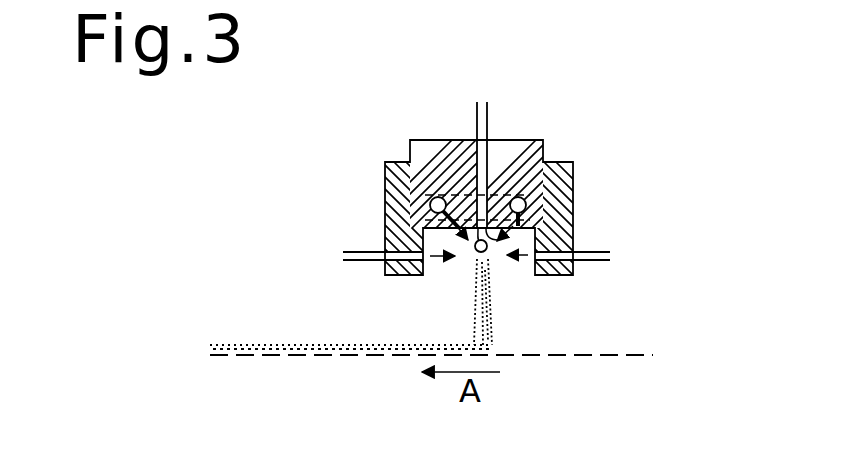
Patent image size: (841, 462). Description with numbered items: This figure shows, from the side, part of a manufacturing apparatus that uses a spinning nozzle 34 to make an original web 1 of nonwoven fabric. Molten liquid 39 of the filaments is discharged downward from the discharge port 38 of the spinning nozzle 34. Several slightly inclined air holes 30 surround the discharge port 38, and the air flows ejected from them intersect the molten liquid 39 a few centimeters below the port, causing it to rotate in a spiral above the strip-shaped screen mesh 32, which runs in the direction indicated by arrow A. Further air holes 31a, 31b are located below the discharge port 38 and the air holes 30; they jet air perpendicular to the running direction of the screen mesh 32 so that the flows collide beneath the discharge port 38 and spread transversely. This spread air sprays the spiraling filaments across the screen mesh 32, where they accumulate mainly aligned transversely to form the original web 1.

The original web 1 is at (320, 348).
The air holes 30 is at (513, 230).
The air hole 31a is at (597, 253).
The air hole 31b is at (357, 247).
The screen mesh 32 is at (590, 357).
The spinning nozzle 34 is at (557, 139).
The discharge port 38 is at (476, 123).
The molten liquid 39 is at (478, 253).